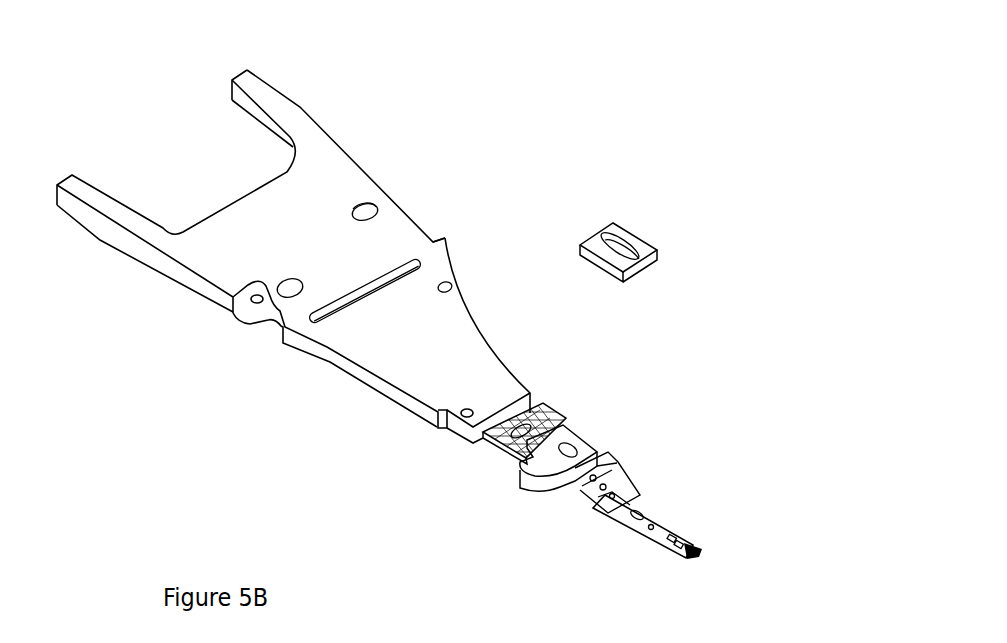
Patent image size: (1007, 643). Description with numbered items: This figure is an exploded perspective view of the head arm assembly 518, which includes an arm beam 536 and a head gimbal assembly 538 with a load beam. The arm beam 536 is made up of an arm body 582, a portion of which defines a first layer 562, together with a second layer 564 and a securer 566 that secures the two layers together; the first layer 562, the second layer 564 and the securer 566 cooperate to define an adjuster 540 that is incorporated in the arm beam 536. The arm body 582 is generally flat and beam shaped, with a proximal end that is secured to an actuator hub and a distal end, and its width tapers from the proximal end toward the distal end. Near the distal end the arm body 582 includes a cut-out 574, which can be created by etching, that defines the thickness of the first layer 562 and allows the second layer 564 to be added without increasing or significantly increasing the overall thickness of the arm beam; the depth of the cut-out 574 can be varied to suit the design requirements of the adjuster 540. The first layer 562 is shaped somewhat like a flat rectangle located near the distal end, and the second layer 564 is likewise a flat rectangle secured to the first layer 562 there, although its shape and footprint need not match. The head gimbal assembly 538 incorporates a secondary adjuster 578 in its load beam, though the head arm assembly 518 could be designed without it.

The head arm assembly 518 is at (549, 126).
The arm beam 536 is at (343, 166).
The head gimbal assembly 538 is at (643, 492).
The adjuster 540 is at (740, 240).
The first layer 562 is at (530, 398).
The second layer 564 is at (640, 237).
The securer 566 is at (545, 417).
The cut-out 574 is at (498, 400).
The secondary adjuster 578 is at (620, 477).
The arm body 582 is at (405, 233).